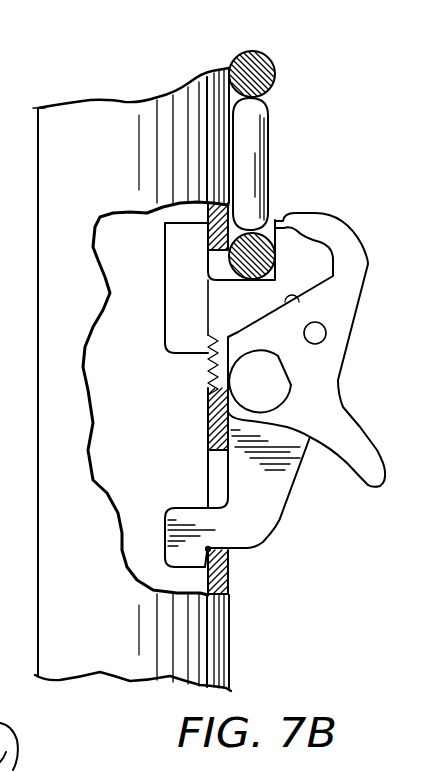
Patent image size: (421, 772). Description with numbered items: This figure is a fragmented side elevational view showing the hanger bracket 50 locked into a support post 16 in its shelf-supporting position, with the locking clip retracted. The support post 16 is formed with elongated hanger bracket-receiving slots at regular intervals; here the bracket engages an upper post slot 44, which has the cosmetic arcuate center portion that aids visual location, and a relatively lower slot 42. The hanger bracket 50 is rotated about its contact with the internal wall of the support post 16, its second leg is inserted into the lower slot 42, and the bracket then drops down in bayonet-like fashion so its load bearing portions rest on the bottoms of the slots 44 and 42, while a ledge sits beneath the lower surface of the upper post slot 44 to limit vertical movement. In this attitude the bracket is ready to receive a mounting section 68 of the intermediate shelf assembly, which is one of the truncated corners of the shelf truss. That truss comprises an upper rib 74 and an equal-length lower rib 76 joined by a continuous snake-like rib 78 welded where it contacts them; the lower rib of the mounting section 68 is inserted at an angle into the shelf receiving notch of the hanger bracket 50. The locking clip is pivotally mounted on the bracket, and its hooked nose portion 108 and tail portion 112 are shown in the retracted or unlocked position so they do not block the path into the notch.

The support post 16 is at (124, 100).
The upper rib 74 is at (268, 58).
The snake-like rib 78 is at (265, 127).
The mounting section 68 is at (284, 156).
The hooked nose portion 108 is at (318, 213).
The upper post slot 44 is at (216, 268).
The lower rib 76 is at (227, 282).
The hanger bracket-receiving slot 42 is at (213, 472).
The hanger bracket 50 is at (282, 527).
The tail portion 112 is at (367, 487).